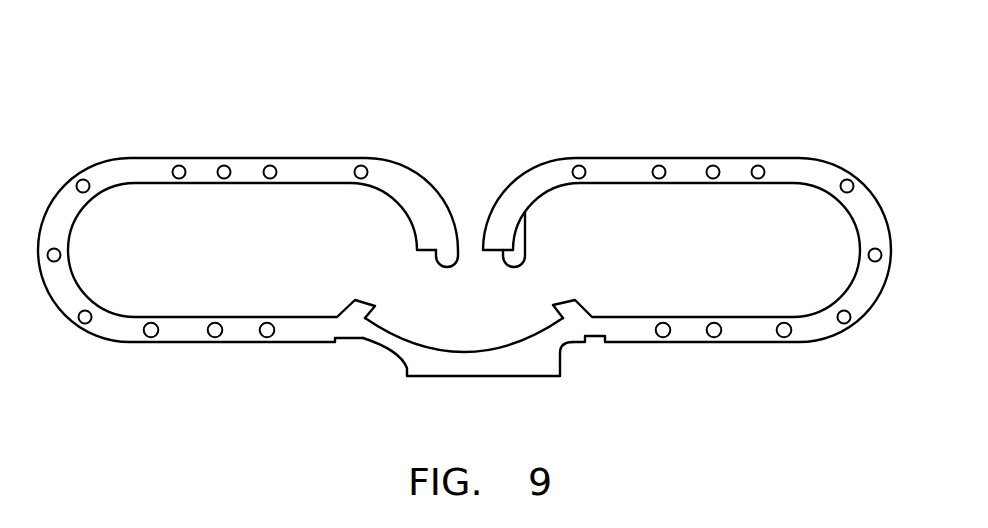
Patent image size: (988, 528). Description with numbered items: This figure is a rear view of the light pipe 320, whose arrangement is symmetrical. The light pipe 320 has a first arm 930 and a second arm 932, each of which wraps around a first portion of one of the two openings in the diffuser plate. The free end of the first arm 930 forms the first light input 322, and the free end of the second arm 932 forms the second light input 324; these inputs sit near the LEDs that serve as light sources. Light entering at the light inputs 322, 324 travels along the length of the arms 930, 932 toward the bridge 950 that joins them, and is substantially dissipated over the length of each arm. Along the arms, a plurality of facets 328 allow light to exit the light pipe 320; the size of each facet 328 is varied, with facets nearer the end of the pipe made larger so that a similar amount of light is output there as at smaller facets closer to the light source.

The light pipe 320 is at (464, 240).
The first arm 930 is at (305, 162).
The second arm 932 is at (627, 163).
The first light input 322 is at (450, 250).
The second light input 324 is at (525, 235).
The facets 328 is at (177, 171).
The bridge 950 is at (540, 367).